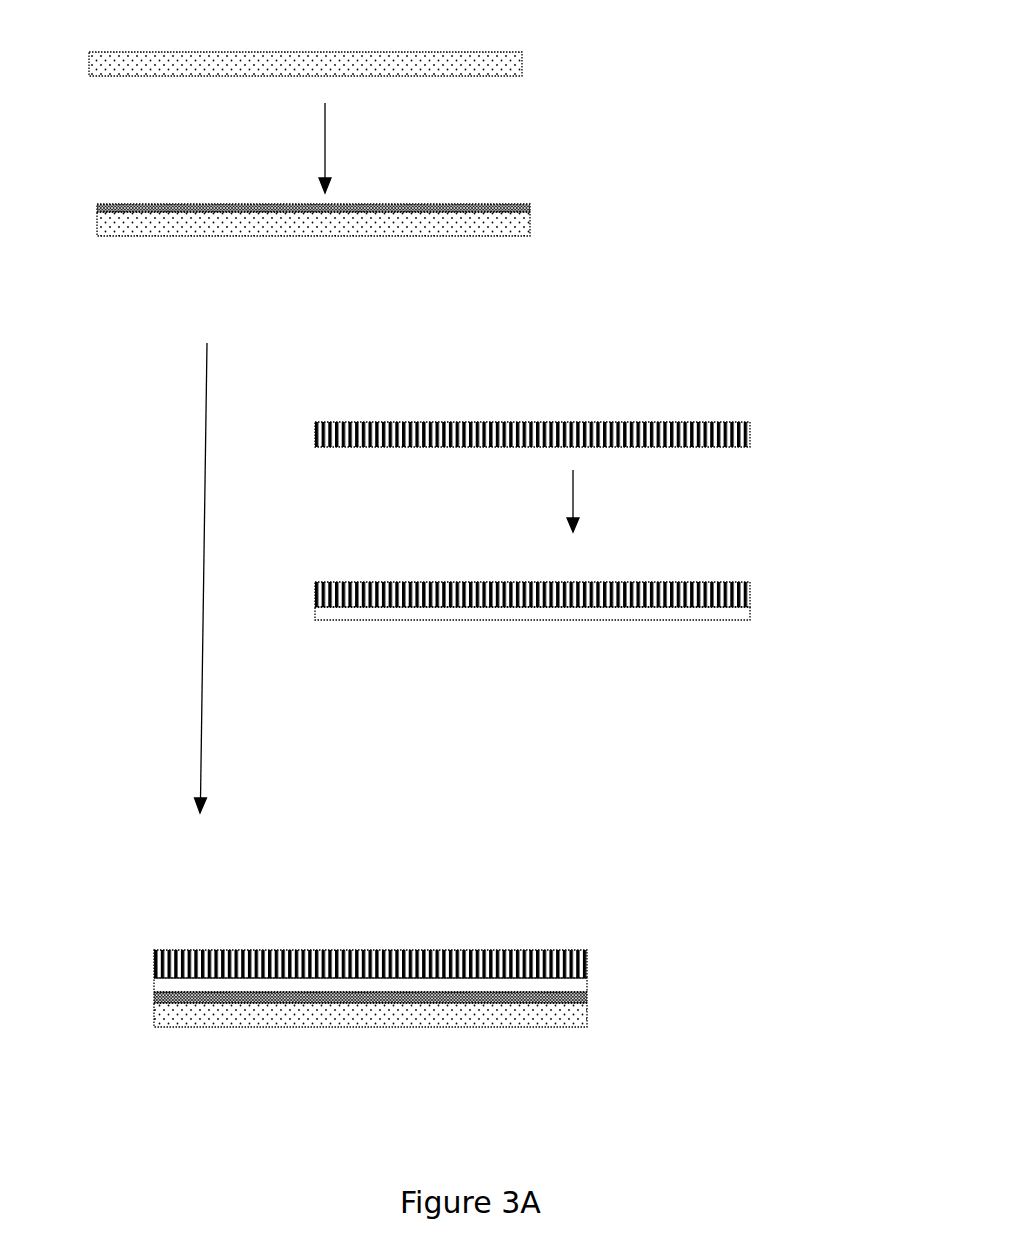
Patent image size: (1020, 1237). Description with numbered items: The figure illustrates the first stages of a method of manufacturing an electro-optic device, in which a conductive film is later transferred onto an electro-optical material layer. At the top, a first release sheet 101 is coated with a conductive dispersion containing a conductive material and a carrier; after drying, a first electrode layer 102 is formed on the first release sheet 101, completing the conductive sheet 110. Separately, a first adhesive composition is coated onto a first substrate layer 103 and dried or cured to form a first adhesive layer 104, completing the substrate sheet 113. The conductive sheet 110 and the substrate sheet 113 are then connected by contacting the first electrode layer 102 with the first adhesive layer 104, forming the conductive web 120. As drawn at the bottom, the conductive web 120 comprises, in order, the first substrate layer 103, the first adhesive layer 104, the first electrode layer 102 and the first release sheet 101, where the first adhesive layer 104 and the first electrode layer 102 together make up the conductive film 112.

The first release sheet 101 is at (655, 1043).
The first electrode layer 102 is at (530, 208).
The first substrate layer 103 is at (590, 960).
The first adhesive layer 104 is at (740, 613).
The conductive sheet 110 is at (745, 1063).
The conductive film 112 is at (147, 972).
The substrate sheet 113 is at (740, 975).
The conductive web 120 is at (138, 935).